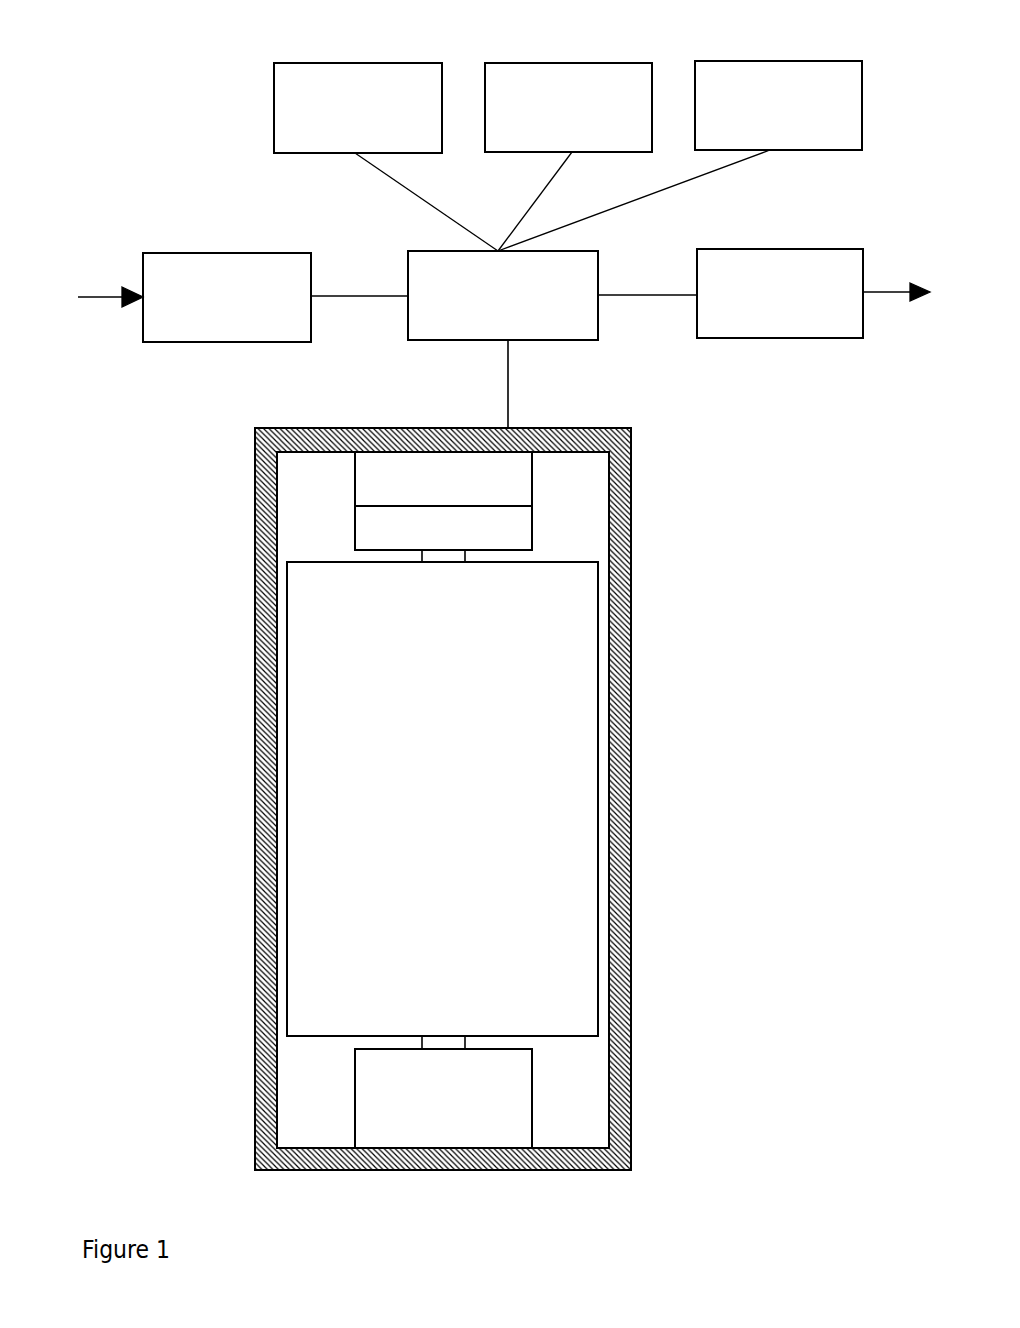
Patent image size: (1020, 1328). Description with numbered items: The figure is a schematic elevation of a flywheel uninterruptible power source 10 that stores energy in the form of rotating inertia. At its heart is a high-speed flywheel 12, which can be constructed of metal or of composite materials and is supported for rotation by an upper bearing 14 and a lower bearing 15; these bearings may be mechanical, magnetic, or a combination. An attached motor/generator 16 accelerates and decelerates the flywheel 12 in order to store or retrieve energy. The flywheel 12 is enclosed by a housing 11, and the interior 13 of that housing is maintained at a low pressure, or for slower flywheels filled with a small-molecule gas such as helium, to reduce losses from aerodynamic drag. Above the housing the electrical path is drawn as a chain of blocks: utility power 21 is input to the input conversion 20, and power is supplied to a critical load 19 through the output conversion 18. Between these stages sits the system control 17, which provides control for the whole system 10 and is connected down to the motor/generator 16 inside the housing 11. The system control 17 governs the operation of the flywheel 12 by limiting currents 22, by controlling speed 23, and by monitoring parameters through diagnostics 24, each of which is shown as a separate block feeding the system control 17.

The flywheel uninterruptible power source 10 is at (122, 50).
The housing 11 is at (631, 524).
The high-speed flywheel 12 is at (583, 557).
The interior 13 is at (600, 1065).
The upper bearing 14 is at (355, 530).
The lower bearing 15 is at (355, 1095).
The motor/generator 16 is at (355, 481).
The system control 17 is at (565, 340).
The output conversion 18 is at (775, 338).
The critical load 19 is at (888, 290).
The input conversion 20 is at (217, 253).
The utility power 21 is at (100, 297).
The current limiting 22 is at (354, 63).
The speed control 23 is at (543, 62).
The diagnostics 24 is at (738, 60).